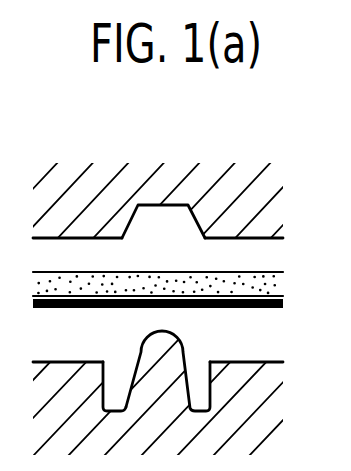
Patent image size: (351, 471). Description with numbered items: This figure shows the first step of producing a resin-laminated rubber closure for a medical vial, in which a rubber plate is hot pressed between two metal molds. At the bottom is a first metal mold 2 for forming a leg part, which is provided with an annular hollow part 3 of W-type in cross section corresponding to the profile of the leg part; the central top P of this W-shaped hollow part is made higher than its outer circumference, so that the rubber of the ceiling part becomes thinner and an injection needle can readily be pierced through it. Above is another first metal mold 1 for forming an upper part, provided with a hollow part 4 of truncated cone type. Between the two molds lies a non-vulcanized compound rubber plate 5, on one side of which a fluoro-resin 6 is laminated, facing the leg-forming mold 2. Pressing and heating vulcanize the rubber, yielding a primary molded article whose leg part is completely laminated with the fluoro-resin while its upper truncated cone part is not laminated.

The first metal mold for forming an upper part 1 is at (245, 183).
The first metal mold for forming a leg part 2 is at (250, 428).
The annular hollow part of W-type 3 is at (123, 380).
The hollow part of truncated cone type 4 is at (165, 220).
The non-vulcanized compound rubber plate 5 is at (153, 273).
The fluoro-resin 6 is at (250, 304).
The central top of the annular hollow part P is at (163, 342).